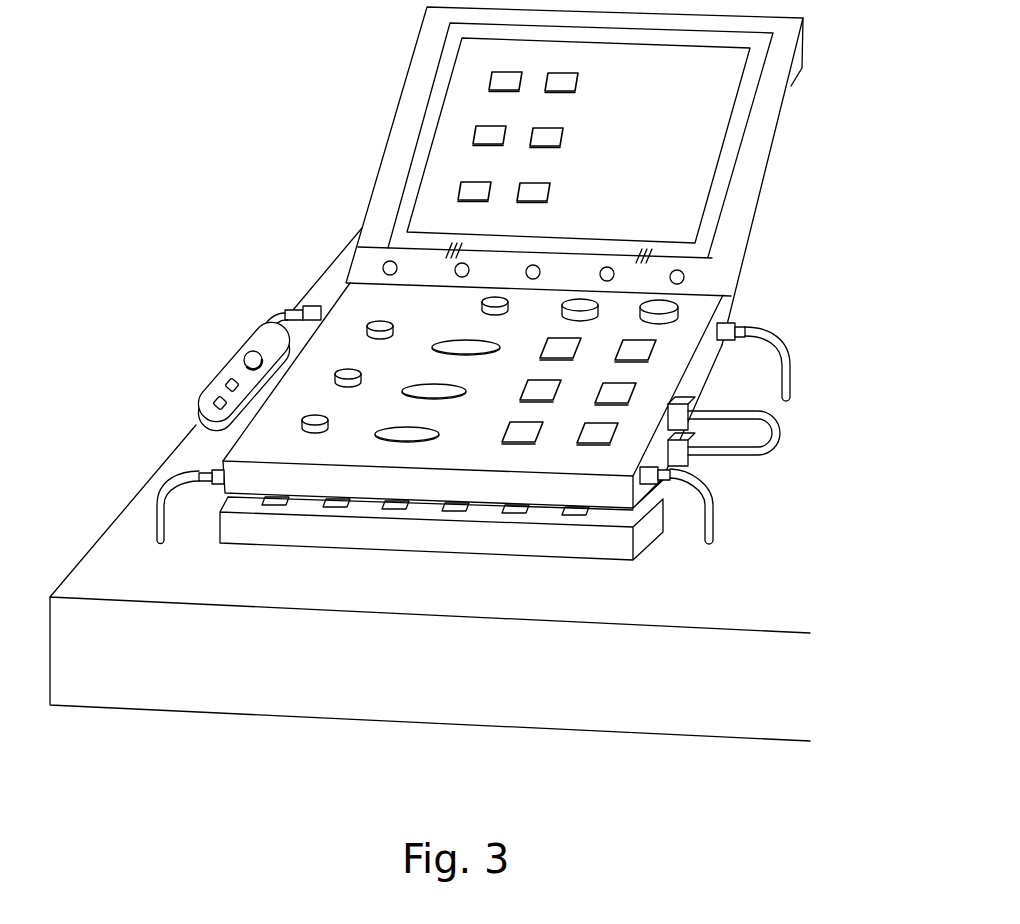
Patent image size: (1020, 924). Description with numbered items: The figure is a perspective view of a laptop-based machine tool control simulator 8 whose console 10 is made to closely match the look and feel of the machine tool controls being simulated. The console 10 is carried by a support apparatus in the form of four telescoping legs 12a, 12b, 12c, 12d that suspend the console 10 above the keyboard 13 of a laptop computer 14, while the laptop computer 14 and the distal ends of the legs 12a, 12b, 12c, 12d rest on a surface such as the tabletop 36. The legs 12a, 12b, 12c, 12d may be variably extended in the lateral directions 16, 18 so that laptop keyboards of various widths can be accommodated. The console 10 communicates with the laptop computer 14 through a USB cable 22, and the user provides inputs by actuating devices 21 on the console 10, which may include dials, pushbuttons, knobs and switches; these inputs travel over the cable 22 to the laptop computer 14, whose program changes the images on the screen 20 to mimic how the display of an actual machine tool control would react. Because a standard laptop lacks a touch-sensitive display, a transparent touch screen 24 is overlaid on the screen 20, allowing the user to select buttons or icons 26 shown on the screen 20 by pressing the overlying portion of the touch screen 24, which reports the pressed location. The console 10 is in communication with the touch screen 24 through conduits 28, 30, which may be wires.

The laptop-based machine tool control simulator 8 is at (217, 148).
The console 10 is at (338, 448).
The telescoping leg 12a is at (785, 358).
The telescoping leg 12b is at (717, 540).
The telescoping leg 12c is at (153, 512).
The telescoping leg 12d is at (267, 320).
The keyboard 13 is at (412, 508).
The laptop computer 14 is at (445, 543).
The lateral direction 16 is at (838, 380).
The lateral direction 18 is at (148, 317).
The screen 20 is at (735, 177).
The user-actuatable devices 21 is at (508, 310).
The USB cable 22 is at (783, 432).
The transparent touch screen 24 is at (718, 110).
The buttons or icons 26 is at (492, 88).
The conduit 28 is at (450, 247).
The conduit 30 is at (712, 254).
The tabletop 36 is at (688, 599).